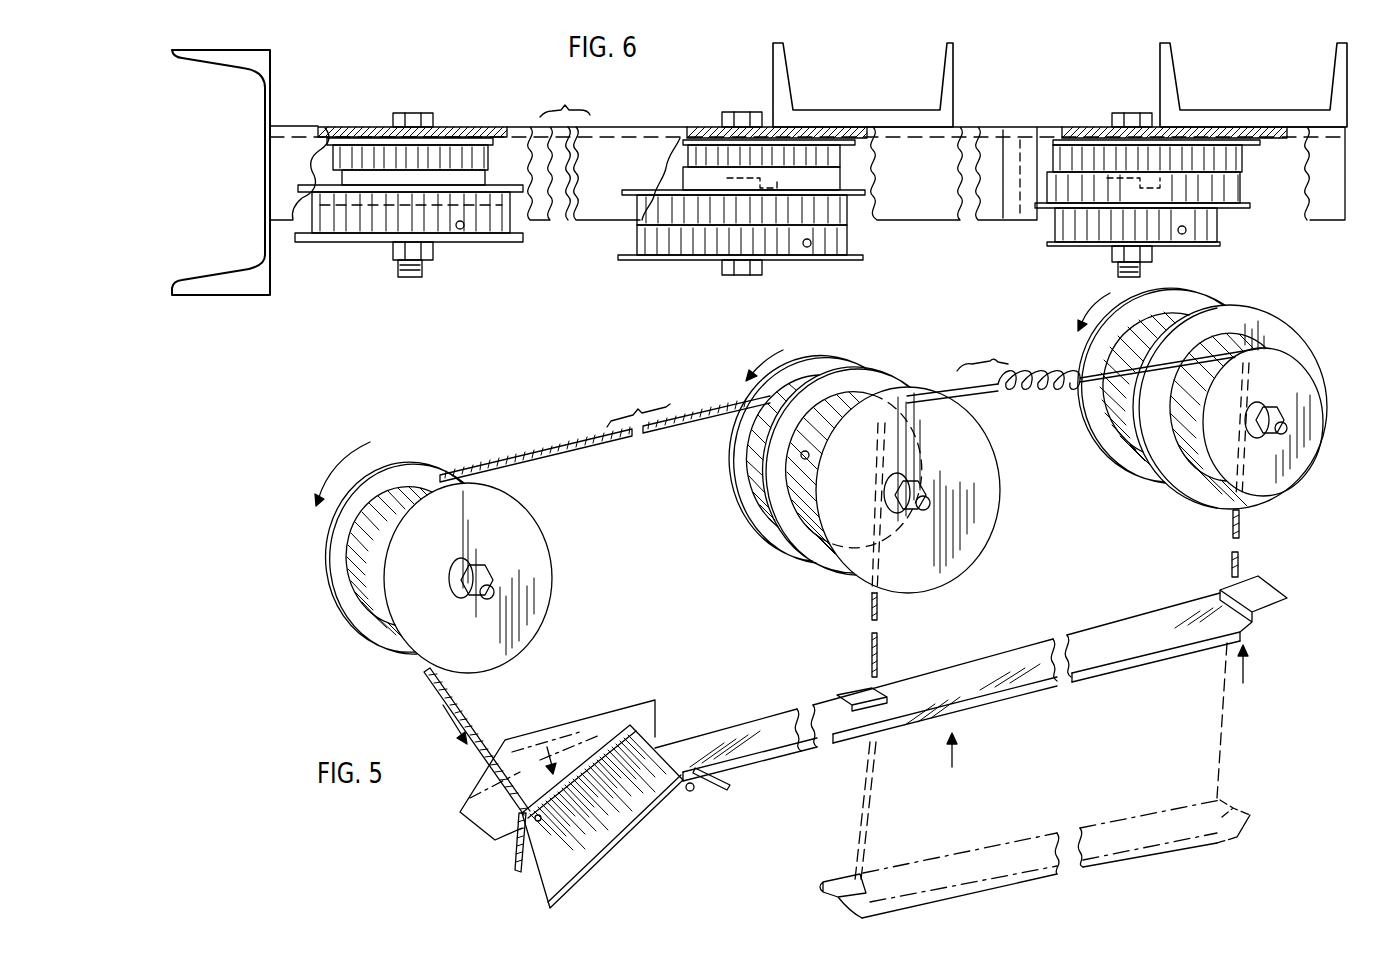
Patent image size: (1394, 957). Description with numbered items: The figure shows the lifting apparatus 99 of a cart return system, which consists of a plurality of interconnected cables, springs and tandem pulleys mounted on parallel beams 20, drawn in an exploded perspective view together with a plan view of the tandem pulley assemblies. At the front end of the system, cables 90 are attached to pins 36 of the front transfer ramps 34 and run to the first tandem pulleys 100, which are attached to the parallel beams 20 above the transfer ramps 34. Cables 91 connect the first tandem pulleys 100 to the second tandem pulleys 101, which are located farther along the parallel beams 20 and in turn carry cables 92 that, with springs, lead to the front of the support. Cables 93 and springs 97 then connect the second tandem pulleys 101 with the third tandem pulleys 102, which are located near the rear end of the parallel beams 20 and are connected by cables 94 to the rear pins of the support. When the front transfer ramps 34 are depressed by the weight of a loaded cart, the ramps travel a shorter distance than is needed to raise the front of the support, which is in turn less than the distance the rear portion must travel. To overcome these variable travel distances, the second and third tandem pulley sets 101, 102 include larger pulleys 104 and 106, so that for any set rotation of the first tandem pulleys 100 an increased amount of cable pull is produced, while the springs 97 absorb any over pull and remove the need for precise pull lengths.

In FIG. 6, the parallel beams 20 is at (517, 123).
In FIG. 5, the front transfer ramps 34 is at (600, 857).
In FIG. 5, the pins 36 is at (522, 843).
In FIG. 5, the cables 90 is at (437, 692).
In FIG. 5, the cables 91 is at (530, 450).
In FIG. 5, the cables 92 is at (858, 808).
In FIG. 5, the cables 93 is at (962, 392).
In FIG. 5, the cables 94 is at (1242, 720).
In FIG. 5, the springs 97 is at (1033, 368).
In FIG. 6, the lifting apparatus 99 is at (852, 268).
In FIG. 5, the lifting apparatus 99 is at (696, 390).
In FIG. 6, the first tandem pulleys 100 is at (417, 277).
In FIG. 5, the first tandem pulleys 100 is at (335, 600).
In FIG. 6, the second tandem pulleys 101 is at (768, 207).
In FIG. 5, the second tandem pulleys 101 is at (870, 365).
In FIG. 6, the third tandem pulleys 102 is at (1164, 195).
In FIG. 5, the third tandem pulleys 102 is at (1283, 323).
In FIG. 6, the larger pulley 104 is at (847, 237).
In FIG. 6, the larger pulley 106 is at (1223, 163).